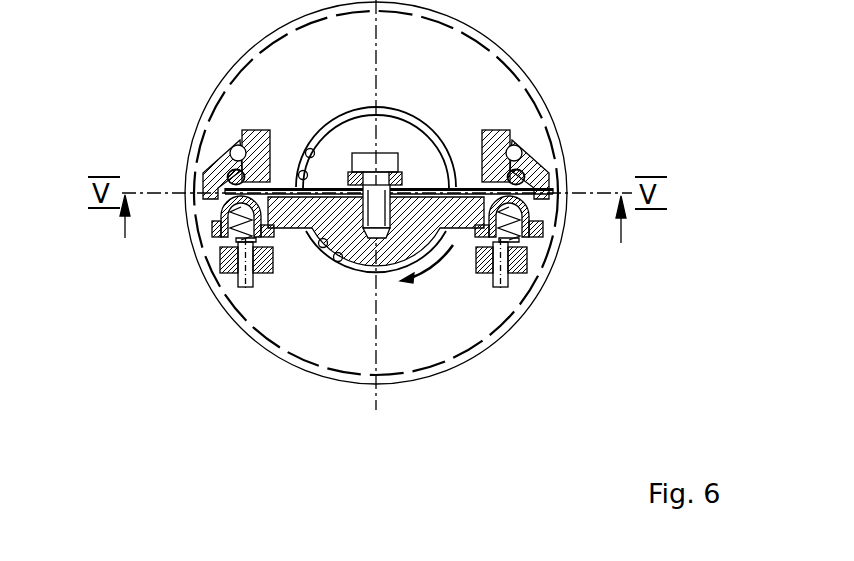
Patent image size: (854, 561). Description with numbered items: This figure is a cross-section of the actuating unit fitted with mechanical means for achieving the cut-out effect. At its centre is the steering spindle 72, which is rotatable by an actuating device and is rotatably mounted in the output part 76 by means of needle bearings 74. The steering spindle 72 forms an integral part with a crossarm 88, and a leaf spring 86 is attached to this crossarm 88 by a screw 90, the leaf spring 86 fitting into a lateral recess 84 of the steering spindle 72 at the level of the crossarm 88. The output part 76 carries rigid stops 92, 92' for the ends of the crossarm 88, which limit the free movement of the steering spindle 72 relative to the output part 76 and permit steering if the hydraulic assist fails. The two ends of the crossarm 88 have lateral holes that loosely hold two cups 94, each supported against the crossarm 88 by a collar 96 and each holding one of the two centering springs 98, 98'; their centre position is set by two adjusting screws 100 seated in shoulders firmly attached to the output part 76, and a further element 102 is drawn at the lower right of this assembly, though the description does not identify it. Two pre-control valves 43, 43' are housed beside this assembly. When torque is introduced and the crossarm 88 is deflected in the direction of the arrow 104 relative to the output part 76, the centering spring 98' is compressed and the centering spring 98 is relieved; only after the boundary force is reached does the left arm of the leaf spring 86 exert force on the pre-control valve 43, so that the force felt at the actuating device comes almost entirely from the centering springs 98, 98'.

The pre-control valve 43 is at (155, 149).
The pre-control valve 43' is at (631, 178).
The steering spindle 72 is at (523, 142).
The needle bearings 74 is at (307, 151).
The output part 76 is at (393, 167).
The lateral recess 84 is at (353, 248).
The leaf spring 86 is at (553, 178).
The crossarm 88 is at (283, 222).
The screw 90 is at (437, 70).
The rigid stop 92 is at (145, 225).
The rigid stop 92' is at (598, 163).
The cup 94 is at (213, 224).
The collar 96 is at (214, 244).
The centering spring 98 is at (205, 391).
The centering spring 98' is at (628, 269).
The adjusting screw 100 is at (531, 273).
The plunger pin 102 is at (481, 274).
The arrow 104 is at (430, 267).